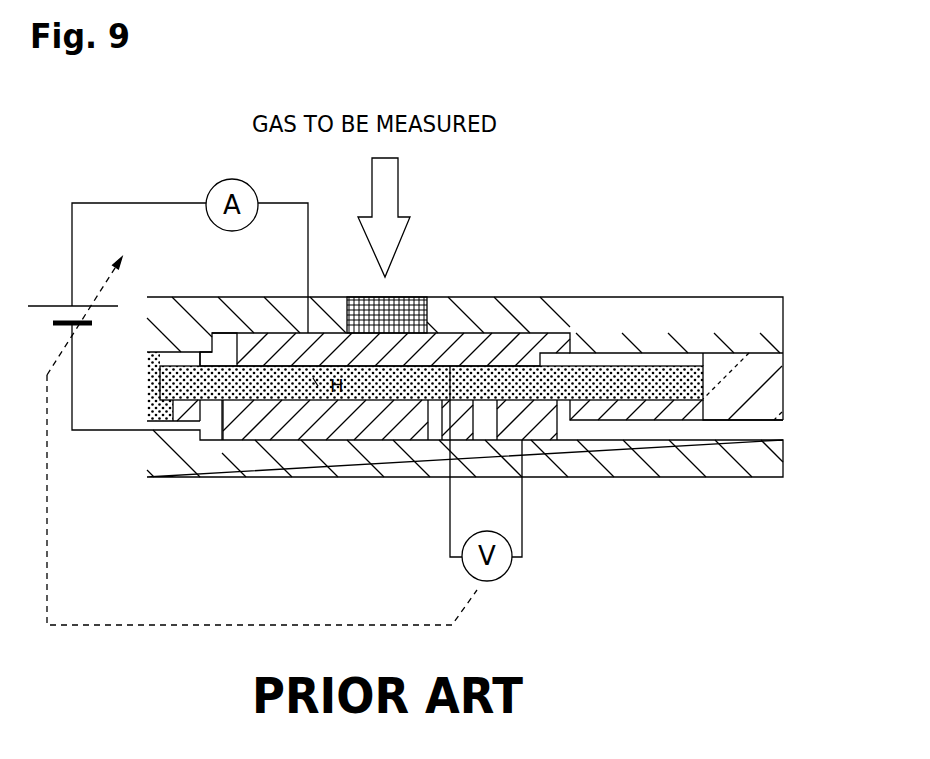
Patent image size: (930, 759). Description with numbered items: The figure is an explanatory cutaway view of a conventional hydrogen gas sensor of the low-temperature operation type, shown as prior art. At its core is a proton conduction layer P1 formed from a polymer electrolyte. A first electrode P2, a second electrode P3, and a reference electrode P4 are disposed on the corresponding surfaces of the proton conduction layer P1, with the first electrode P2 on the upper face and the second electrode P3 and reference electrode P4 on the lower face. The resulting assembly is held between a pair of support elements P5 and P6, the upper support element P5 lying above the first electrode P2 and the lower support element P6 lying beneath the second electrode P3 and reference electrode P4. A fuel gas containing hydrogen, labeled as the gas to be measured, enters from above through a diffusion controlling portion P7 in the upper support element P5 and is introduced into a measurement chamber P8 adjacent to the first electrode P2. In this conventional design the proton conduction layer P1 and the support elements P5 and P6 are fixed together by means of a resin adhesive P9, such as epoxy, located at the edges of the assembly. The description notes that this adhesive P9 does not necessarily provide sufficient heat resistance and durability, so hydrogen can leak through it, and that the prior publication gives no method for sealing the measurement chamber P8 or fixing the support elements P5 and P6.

The proton conduction layer P1 is at (645, 366).
The first electrode P2 is at (468, 340).
The second electrode P3 is at (320, 428).
The reference electrode P4 is at (541, 430).
The support element P5 is at (727, 325).
The support element P6 is at (670, 463).
The diffusion controlling portion P7 is at (397, 315).
The measurement chamber P8 is at (230, 348).
The resin adhesive P9 is at (145, 358).